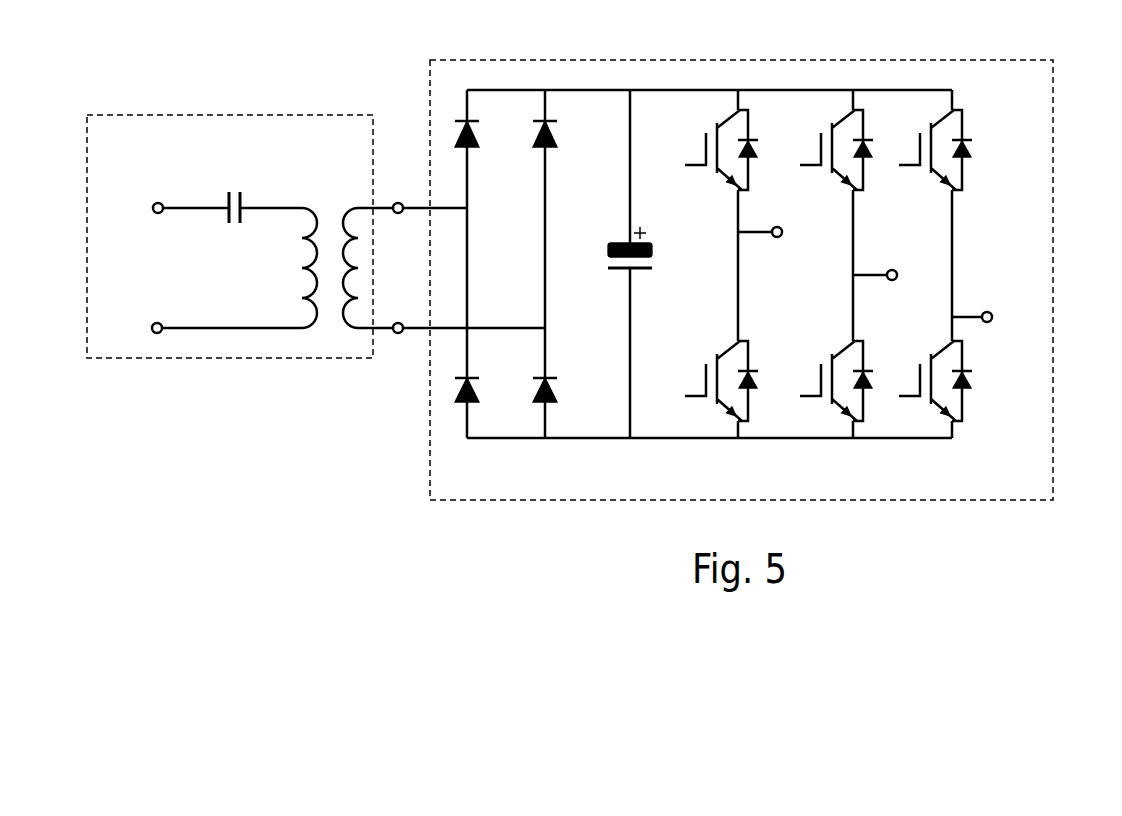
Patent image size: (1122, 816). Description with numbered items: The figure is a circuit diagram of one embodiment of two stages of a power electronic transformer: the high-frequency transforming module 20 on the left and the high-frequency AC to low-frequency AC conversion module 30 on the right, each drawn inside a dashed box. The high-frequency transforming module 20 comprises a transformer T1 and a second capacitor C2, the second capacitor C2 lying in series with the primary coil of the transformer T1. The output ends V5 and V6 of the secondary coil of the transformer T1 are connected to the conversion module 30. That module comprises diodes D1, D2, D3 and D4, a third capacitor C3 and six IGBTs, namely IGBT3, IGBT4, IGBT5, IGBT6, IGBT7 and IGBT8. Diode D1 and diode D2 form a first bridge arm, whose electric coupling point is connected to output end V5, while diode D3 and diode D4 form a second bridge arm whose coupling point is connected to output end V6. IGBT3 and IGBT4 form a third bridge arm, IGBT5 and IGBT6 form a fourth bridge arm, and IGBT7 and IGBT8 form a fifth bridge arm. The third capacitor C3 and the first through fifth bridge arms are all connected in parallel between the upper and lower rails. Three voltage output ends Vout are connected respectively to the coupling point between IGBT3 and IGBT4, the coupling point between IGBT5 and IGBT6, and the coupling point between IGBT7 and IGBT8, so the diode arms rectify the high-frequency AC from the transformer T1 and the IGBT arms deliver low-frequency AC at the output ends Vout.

The high-frequency transforming module 20 is at (196, 115).
The high-frequency AC to low-frequency AC conversion module 30 is at (651, 58).
The second capacitor C2 is at (233, 192).
The transformer T1 is at (316, 212).
The output end V5 is at (428, 191).
The output end V6 is at (467, 353).
The diode D1 is at (478, 125).
The diode D2 is at (478, 381).
The diode D3 is at (556, 125).
The diode D4 is at (556, 381).
The third capacitor C3 is at (606, 252).
The IGBT IGBT3 is at (758, 141).
The IGBT IGBT4 is at (750, 407).
The IGBT IGBT5 is at (873, 141).
The IGBT IGBT6 is at (865, 407).
The IGBT IGBT7 is at (972, 141).
The IGBT IGBT8 is at (965, 407).
The voltage output end Vout is at (885, 277).